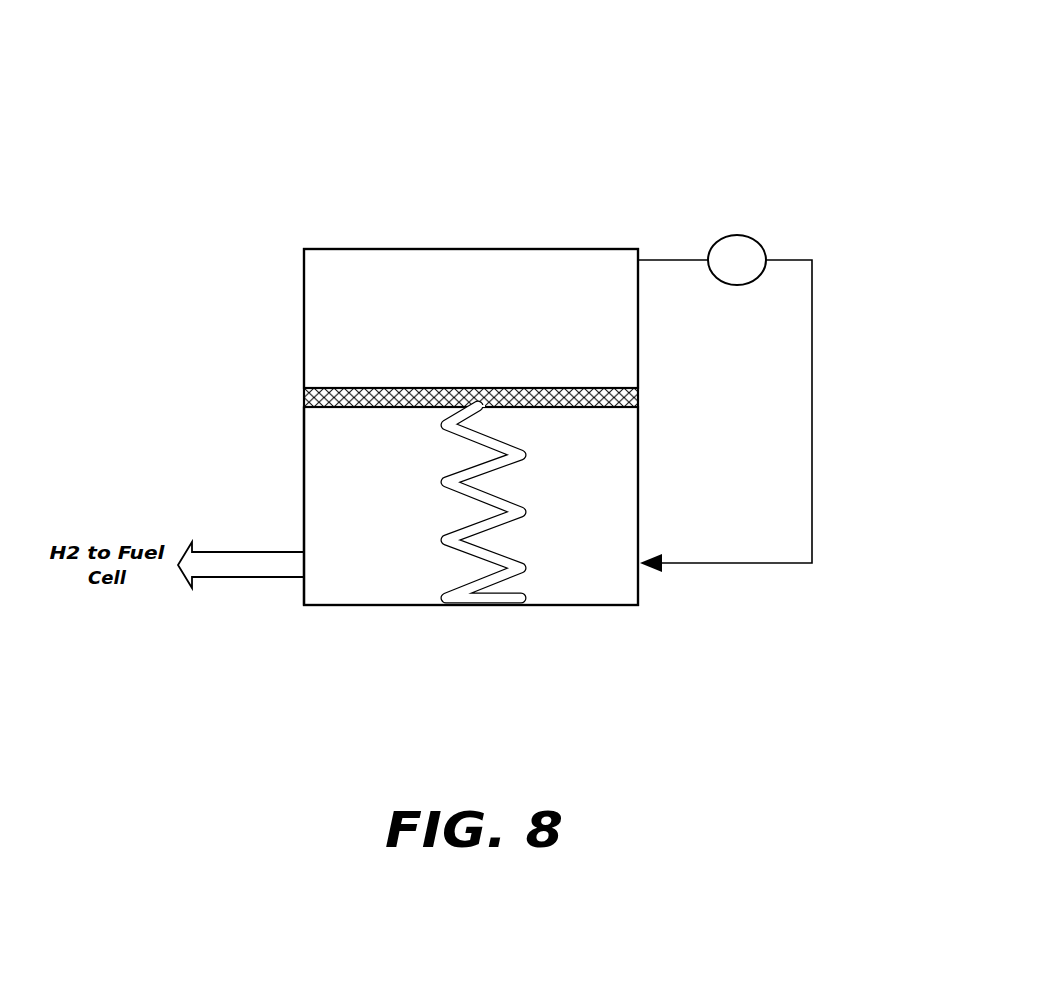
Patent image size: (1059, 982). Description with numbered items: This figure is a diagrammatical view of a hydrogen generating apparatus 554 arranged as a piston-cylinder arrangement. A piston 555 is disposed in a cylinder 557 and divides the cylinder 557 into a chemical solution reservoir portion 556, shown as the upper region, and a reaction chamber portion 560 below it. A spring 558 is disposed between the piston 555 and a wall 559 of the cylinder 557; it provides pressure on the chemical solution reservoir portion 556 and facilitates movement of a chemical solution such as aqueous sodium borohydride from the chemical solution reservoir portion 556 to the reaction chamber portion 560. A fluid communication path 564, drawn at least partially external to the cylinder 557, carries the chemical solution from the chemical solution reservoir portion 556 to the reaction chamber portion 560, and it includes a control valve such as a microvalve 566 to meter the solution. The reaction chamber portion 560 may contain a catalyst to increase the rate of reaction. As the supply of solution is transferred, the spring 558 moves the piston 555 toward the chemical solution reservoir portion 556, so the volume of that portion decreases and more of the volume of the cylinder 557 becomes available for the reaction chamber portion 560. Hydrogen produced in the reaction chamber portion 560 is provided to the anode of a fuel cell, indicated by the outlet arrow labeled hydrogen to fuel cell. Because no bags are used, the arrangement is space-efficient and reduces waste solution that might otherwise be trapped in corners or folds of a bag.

The hydrogen generating apparatus 554 is at (652, 121).
The piston 555 is at (337, 388).
The chemical solution reservoir portion 556 is at (340, 270).
The cylinder 557 is at (304, 457).
The spring 558 is at (453, 548).
The wall 559 is at (547, 606).
The reaction chamber portion 560 is at (340, 490).
The fluid communication path 564 is at (720, 565).
The microvalve 566 is at (741, 236).